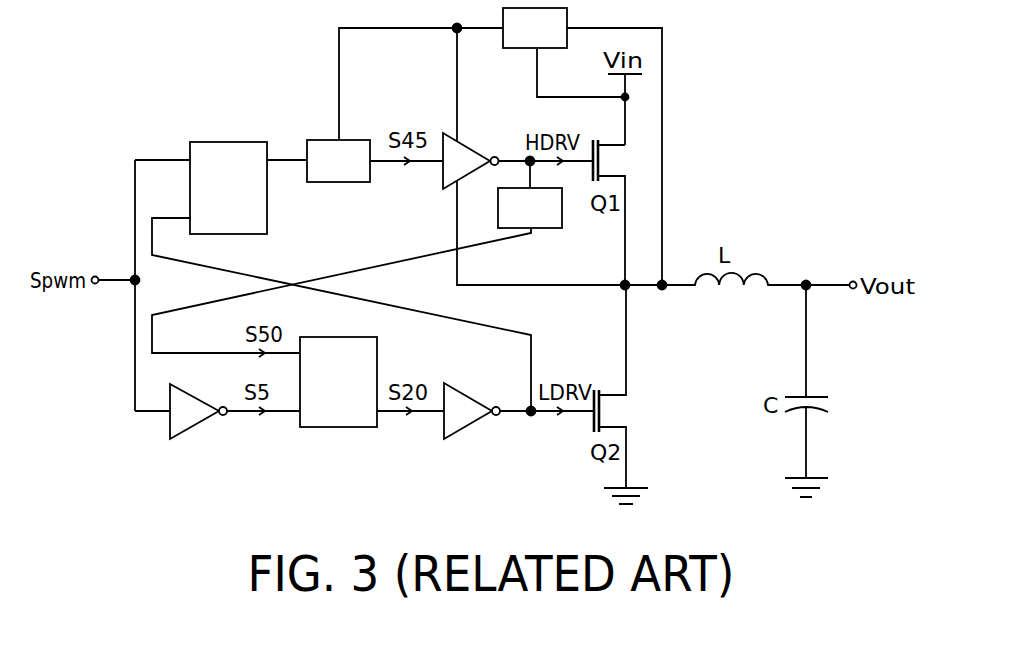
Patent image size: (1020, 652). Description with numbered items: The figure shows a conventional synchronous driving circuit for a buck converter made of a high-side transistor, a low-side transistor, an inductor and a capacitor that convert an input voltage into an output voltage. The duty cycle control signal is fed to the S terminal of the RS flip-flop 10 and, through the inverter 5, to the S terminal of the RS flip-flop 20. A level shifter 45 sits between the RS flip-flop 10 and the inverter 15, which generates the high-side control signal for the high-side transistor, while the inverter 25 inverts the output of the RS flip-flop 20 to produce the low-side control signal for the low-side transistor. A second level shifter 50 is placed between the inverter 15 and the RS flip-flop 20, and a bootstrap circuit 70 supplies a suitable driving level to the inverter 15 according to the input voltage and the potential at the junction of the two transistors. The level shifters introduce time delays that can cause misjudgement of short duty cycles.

The inverter 5 is at (191, 423).
The RS flip-flop 10 is at (266, 218).
The inverter 15 is at (465, 148).
The RS flip-flop 20 is at (377, 356).
The inverter 25 is at (466, 398).
The level shifter 45 is at (351, 175).
The level shifter 50 is at (543, 222).
The bootstrap circuit 70 is at (548, 42).